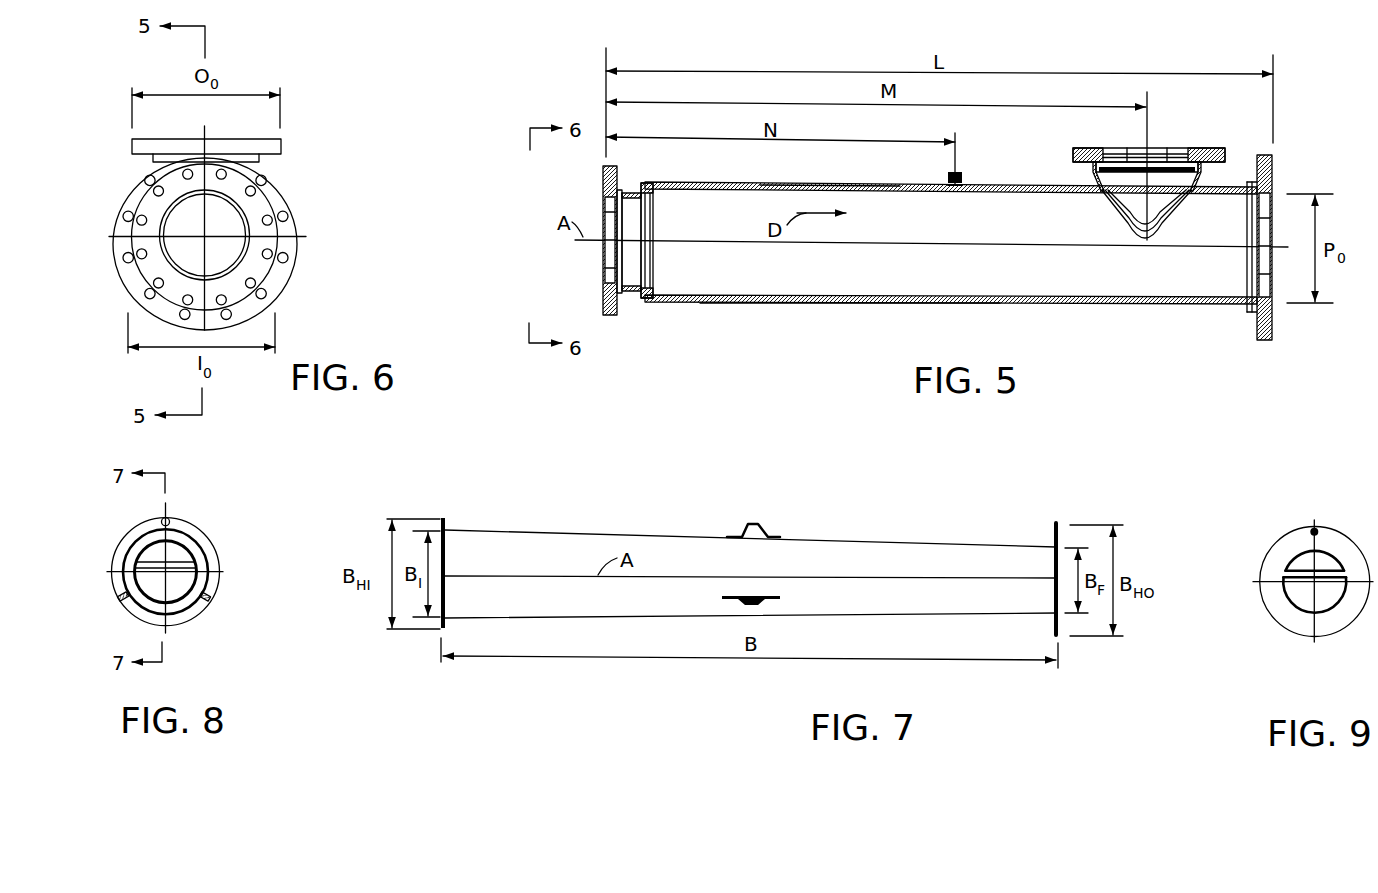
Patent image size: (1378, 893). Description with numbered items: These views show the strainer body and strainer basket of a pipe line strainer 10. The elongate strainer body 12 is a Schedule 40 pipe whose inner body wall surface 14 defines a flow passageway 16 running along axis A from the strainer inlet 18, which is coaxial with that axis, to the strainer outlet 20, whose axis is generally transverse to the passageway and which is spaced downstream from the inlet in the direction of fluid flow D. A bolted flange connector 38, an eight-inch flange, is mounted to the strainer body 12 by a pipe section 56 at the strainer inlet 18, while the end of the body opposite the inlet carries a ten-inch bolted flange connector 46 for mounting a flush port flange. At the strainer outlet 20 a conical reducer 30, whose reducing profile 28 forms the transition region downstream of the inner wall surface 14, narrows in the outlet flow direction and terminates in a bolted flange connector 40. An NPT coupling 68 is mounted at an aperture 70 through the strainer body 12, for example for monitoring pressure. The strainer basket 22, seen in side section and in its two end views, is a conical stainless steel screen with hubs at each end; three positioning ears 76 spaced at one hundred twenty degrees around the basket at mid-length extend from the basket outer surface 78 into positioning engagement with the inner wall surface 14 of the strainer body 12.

In FIG. 5, the pipe line strainer 10 is at (825, 333).
In FIG. 5, the strainer body 12 is at (693, 302).
In FIG. 5, the inner body wall surface 14 is at (838, 189).
In FIG. 5, the flow passageway 16 is at (720, 234).
In FIG. 5, the strainer inlet 18 is at (602, 257).
In FIG. 6, the strainer outlet 20 is at (218, 138).
In FIG. 5, the strainer outlet 20 is at (1128, 148).
In FIG. 7, the strainer basket 22 is at (865, 530).
In FIG. 8, the strainer basket 22 is at (222, 525).
In FIG. 9, the strainer basket 22 is at (1262, 633).
In FIG. 5, the reducing profile 28 is at (1097, 177).
In FIG. 5, the conical reducer 30 is at (1167, 197).
In FIG. 6, the bolted flange connector 38 is at (263, 206).
In FIG. 5, the bolted flange connector 38 is at (608, 320).
In FIG. 6, the bolted flange connector 40 is at (140, 147).
In FIG. 5, the bolted flange connector 40 is at (1223, 150).
In FIG. 5, the bolted flange connector 46 is at (1273, 172).
In FIG. 5, the pipe section 56 is at (630, 288).
In FIG. 5, the NPT coupling 68 is at (962, 173).
In FIG. 5, the aperture 70 is at (954, 188).
In FIG. 7, the positioning ears 76 is at (757, 522).
In FIG. 7, the basket outer surface 78 is at (850, 616).